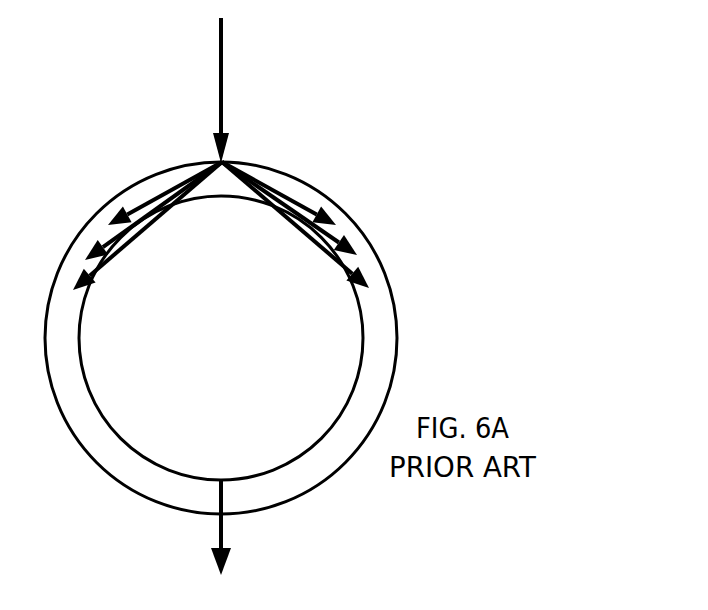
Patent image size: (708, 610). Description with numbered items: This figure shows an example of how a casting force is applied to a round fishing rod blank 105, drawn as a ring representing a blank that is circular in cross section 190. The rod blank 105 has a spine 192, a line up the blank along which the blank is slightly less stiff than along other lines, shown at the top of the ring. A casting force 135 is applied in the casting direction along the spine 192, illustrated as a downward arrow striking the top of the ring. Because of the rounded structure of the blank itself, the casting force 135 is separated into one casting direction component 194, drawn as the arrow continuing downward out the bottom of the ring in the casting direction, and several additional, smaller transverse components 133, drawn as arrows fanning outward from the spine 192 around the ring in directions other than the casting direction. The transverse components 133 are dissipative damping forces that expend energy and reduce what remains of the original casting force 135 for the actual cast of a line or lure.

The rod blank 105 is at (345, 338).
The circular in cross section 190 is at (393, 248).
The casting force 135 is at (323, 148).
The spine 192 is at (200, 149).
The transverse components 133 is at (254, 196).
The casting direction component 194 is at (366, 585).